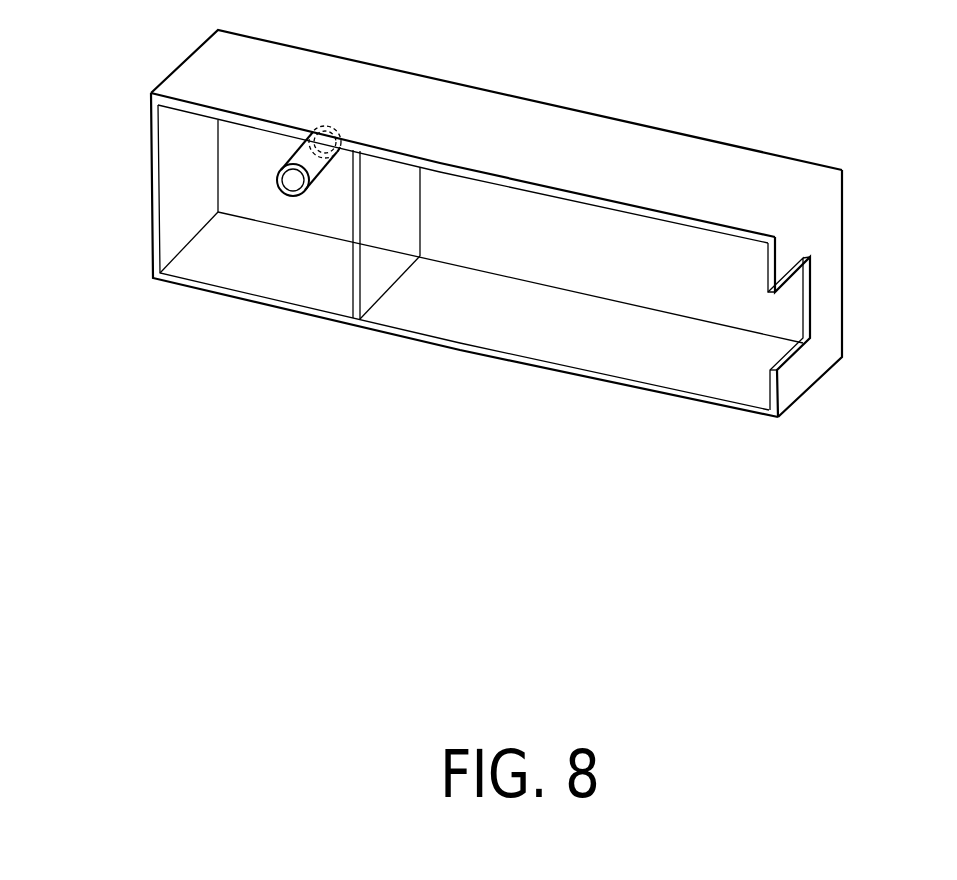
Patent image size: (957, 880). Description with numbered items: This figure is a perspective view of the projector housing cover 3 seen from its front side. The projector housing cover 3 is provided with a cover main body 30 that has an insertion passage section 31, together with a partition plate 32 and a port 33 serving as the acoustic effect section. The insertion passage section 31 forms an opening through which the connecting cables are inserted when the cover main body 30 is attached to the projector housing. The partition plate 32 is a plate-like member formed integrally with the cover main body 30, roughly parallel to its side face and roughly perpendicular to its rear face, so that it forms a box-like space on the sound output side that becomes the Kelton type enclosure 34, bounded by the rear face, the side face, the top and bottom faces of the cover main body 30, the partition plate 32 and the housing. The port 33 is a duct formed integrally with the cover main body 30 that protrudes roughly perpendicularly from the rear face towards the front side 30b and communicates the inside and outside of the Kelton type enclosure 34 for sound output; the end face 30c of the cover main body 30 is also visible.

The projector housing cover 3 is at (546, 254).
The cover main body 30 is at (658, 363).
The front side 30b is at (578, 197).
The right end wall 30c is at (828, 231).
The insertion passage section 31 is at (806, 306).
The partition plate 32 is at (380, 258).
The port 33 is at (292, 181).
The Kelton type enclosure 34 is at (320, 287).